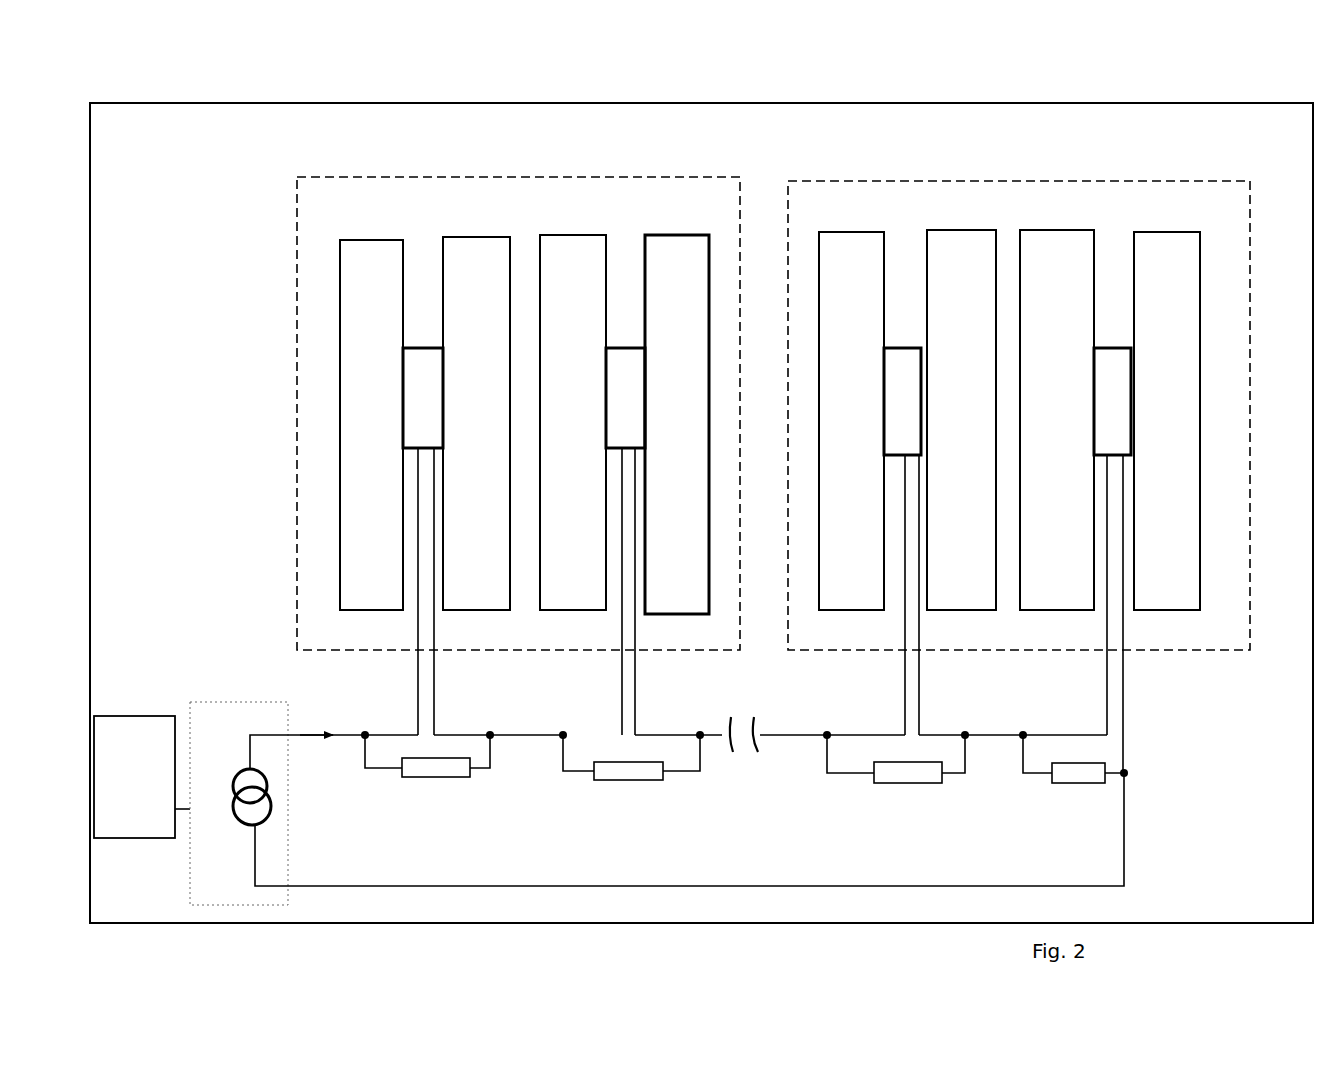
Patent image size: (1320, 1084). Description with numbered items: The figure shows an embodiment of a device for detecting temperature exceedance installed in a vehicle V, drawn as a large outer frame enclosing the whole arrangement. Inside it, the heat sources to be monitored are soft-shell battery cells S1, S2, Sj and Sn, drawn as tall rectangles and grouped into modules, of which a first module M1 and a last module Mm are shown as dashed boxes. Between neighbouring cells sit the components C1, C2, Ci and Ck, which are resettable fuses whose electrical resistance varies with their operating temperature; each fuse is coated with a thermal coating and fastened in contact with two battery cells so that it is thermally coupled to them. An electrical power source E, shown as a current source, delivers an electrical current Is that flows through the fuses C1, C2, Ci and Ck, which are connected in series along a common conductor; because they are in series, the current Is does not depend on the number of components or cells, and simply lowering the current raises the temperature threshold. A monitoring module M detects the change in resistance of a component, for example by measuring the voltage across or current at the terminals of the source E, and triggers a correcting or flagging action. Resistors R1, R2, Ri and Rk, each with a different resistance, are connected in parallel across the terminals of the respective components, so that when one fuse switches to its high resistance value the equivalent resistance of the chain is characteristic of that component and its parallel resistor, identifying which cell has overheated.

The vehicle V is at (1252, 103).
The module M1 is at (296, 263).
The module Mm is at (1252, 283).
The heat source S1 is at (357, 300).
The heat source S2 is at (488, 255).
The component C1 is at (413, 395).
The component C2 is at (626, 368).
The component Ci is at (917, 368).
The heat source Sj is at (958, 265).
The component Ck is at (1109, 370).
The heat source Sn is at (1180, 270).
The monitoring module M is at (137, 730).
The electrical power source E is at (188, 893).
The electrical current Is is at (316, 710).
The resistor R1 is at (432, 780).
The resistor R2 is at (628, 782).
The resistor Ri is at (906, 785).
The resistor Rk is at (1087, 776).